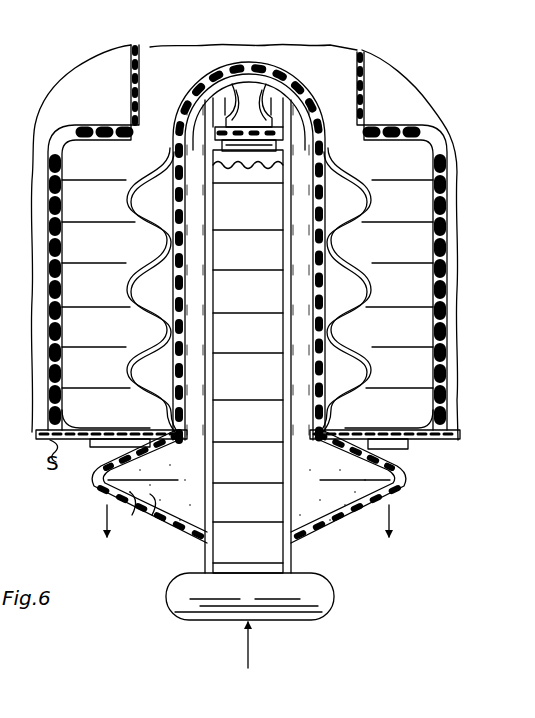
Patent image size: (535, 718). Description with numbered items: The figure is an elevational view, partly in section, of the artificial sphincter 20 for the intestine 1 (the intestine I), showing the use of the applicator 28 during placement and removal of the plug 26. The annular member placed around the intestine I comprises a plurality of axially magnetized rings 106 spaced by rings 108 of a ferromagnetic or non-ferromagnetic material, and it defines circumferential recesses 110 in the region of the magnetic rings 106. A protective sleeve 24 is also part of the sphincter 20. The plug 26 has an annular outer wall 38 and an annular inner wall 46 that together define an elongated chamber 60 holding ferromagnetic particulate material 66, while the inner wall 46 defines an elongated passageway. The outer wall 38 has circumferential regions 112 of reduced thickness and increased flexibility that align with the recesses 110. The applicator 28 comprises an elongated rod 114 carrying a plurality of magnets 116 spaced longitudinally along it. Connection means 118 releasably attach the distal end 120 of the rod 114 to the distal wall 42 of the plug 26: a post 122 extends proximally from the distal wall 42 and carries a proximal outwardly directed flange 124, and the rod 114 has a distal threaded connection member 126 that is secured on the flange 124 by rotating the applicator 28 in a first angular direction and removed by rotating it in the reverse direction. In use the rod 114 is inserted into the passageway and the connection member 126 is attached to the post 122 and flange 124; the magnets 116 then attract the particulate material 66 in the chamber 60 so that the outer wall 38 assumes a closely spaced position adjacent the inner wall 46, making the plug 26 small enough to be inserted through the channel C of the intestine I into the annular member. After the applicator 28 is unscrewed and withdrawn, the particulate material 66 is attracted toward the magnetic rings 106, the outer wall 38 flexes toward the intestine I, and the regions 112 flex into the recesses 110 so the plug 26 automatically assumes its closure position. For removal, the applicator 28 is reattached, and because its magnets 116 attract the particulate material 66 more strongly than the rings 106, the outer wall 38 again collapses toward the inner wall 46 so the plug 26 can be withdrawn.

The magnetic actuator assembly 1 is at (131, 47).
The channel C is at (153, 52).
The axially magnetized rings 106 is at (81, 192).
The spacer rings 108 is at (97, 243).
The circumferential recesses 110 is at (124, 298).
The regions of reduced thickness 112 is at (180, 291).
The connection means 118 is at (268, 118).
The distal end 120 is at (287, 142).
The post 122 is at (257, 55).
The flange 124 is at (246, 88).
The threaded connection member 126 is at (215, 92).
The protective sleeve 24 is at (300, 64).
The distal wall 42 is at (200, 82).
The outer wall 38 is at (143, 460).
The inner wall 46 is at (196, 474).
The plug chamber 60 is at (125, 493).
The particulate material 66 is at (150, 497).
The magnets 116 is at (274, 498).
The rod 114 is at (288, 550).
The plug 26 is at (357, 522).
The artificial sphincter 20 is at (170, 534).
The applicator 28 is at (164, 601).